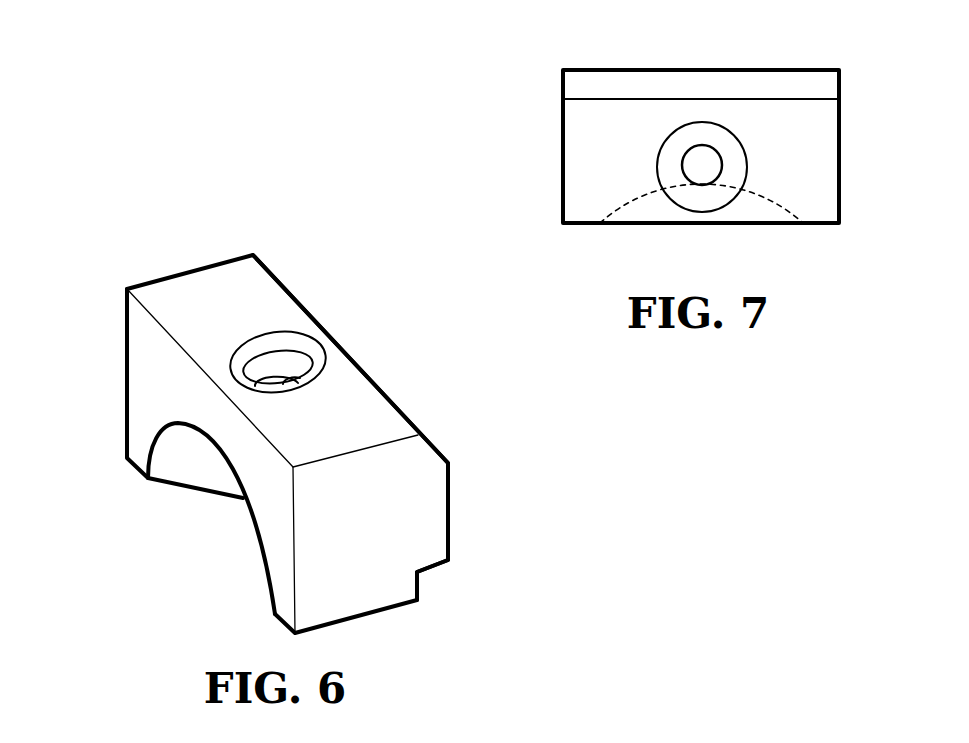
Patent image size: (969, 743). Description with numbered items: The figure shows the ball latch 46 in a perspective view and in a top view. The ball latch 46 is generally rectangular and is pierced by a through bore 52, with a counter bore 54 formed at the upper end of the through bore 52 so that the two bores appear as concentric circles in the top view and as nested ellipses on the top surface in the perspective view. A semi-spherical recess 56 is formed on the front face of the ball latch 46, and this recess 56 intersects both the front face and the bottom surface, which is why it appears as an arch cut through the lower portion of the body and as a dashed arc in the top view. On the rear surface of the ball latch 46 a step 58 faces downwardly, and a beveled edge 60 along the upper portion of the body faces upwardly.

In FIG. 6, the ball latch 46 is at (122, 376).
In FIG. 7, the ball latch 46 is at (556, 138).
In FIG. 6, the through bore 52 is at (283, 383).
In FIG. 7, the through bore 52 is at (710, 157).
In FIG. 6, the counter bore 54 is at (288, 362).
In FIG. 7, the counter bore 54 is at (735, 172).
In FIG. 6, the semi-spherical recess 56 is at (192, 455).
In FIG. 7, the semi-spherical recess 56 is at (765, 197).
In FIG. 6, the step 58 is at (431, 570).
In FIG. 6, the beveled edge 60 is at (403, 412).
In FIG. 7, the beveled edge 60 is at (773, 90).